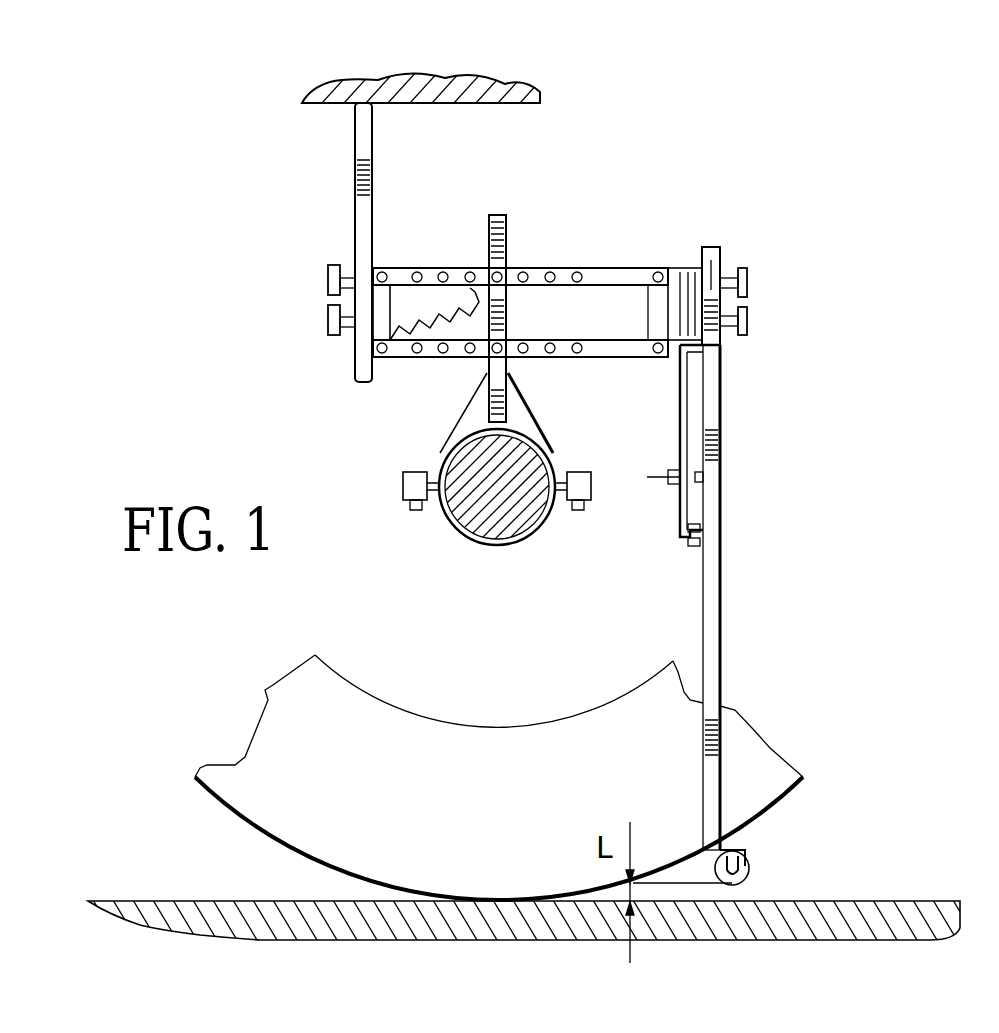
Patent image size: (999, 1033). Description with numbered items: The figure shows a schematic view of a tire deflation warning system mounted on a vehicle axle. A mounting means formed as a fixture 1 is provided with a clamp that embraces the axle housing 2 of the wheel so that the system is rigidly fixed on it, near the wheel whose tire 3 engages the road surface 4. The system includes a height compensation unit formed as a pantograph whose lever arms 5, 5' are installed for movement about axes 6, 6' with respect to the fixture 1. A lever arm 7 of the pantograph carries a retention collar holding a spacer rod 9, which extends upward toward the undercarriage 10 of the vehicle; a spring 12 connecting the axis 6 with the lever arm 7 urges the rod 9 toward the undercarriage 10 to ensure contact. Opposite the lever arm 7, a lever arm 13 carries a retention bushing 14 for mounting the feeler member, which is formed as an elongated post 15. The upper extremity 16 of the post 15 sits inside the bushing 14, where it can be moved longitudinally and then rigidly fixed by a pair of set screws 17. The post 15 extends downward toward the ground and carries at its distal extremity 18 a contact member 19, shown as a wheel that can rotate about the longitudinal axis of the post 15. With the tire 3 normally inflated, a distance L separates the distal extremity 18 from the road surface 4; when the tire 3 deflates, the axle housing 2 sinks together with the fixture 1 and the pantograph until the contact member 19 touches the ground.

The fixture 1 is at (489, 378).
The axle housing 2 is at (474, 510).
The tire 3 is at (368, 714).
The road surface 4 is at (858, 901).
The lever arm 5 is at (520, 253).
The lever arm 5' is at (520, 342).
The axis 6 is at (513, 318).
The axis 6' is at (525, 311).
The lever arm 7 is at (396, 290).
The spacer rod 9 is at (355, 175).
The undercarriage 10 is at (328, 104).
The spring 12 is at (455, 282).
The lever arm 13 is at (681, 270).
The retention bushing 14 is at (713, 280).
The post 15 is at (718, 594).
The upper extremity 16 is at (708, 250).
The set screws 17 is at (327, 320).
The distal extremity 18 is at (712, 792).
The contact member 19 is at (749, 868).